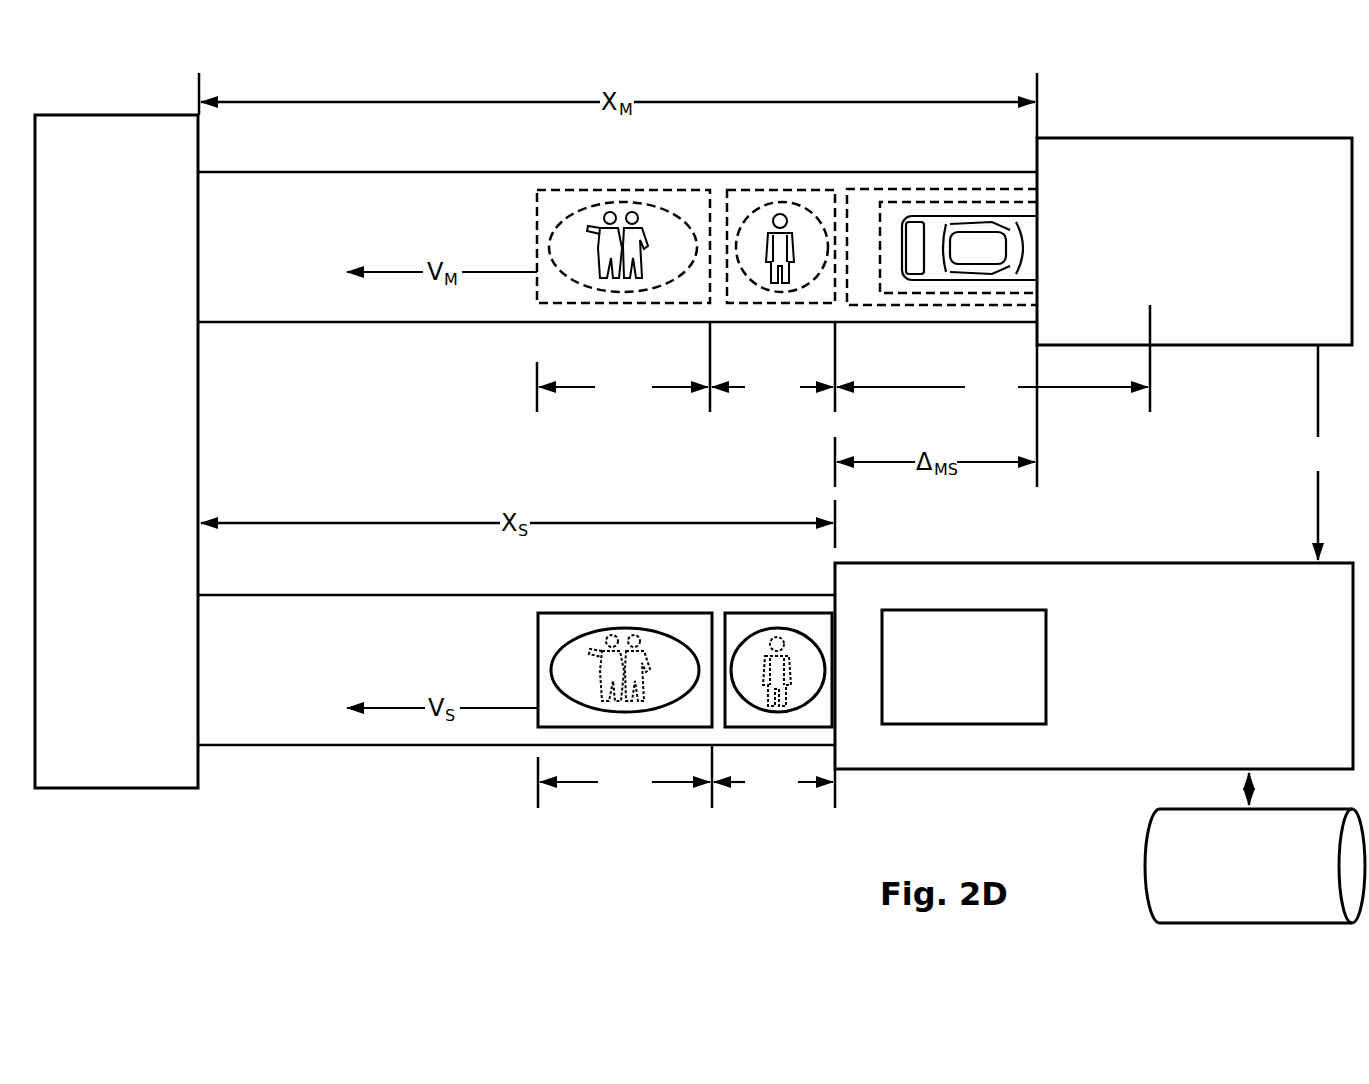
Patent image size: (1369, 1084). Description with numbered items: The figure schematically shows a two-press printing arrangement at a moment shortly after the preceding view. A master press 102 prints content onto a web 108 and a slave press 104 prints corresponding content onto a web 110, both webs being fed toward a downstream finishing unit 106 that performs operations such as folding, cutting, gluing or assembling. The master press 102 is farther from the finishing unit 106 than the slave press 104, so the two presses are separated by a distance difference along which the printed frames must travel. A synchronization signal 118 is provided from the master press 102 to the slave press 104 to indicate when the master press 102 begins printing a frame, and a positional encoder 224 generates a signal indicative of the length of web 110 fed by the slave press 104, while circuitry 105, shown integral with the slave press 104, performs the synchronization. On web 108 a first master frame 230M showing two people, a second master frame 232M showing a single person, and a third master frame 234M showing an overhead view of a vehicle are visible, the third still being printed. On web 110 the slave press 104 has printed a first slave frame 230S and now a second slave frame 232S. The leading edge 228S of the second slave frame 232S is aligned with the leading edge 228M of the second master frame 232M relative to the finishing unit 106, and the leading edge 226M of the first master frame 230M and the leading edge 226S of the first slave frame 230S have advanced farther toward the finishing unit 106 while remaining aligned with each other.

The master press 102 is at (1194, 241).
The slave press 104 is at (1094, 666).
The circuitry 105 is at (964, 667).
The finishing unit 106 is at (116, 451).
The web 108 is at (578, 171).
The web 110 is at (577, 594).
The synchronization signal 118 is at (1318, 452).
The positional encoder 224 is at (1255, 848).
The leading edge of first master frame 226M is at (537, 228).
The leading edge of second master frame 228M is at (727, 207).
The leading edge of first slave frame 226S is at (538, 677).
The leading edge of second slave frame 228S is at (725, 632).
The first master frame 230M is at (623, 389).
The second master frame 232M is at (772, 389).
The third master frame 234M is at (992, 389).
The first slave frame 230S is at (625, 784).
The second slave frame 232S is at (773, 784).